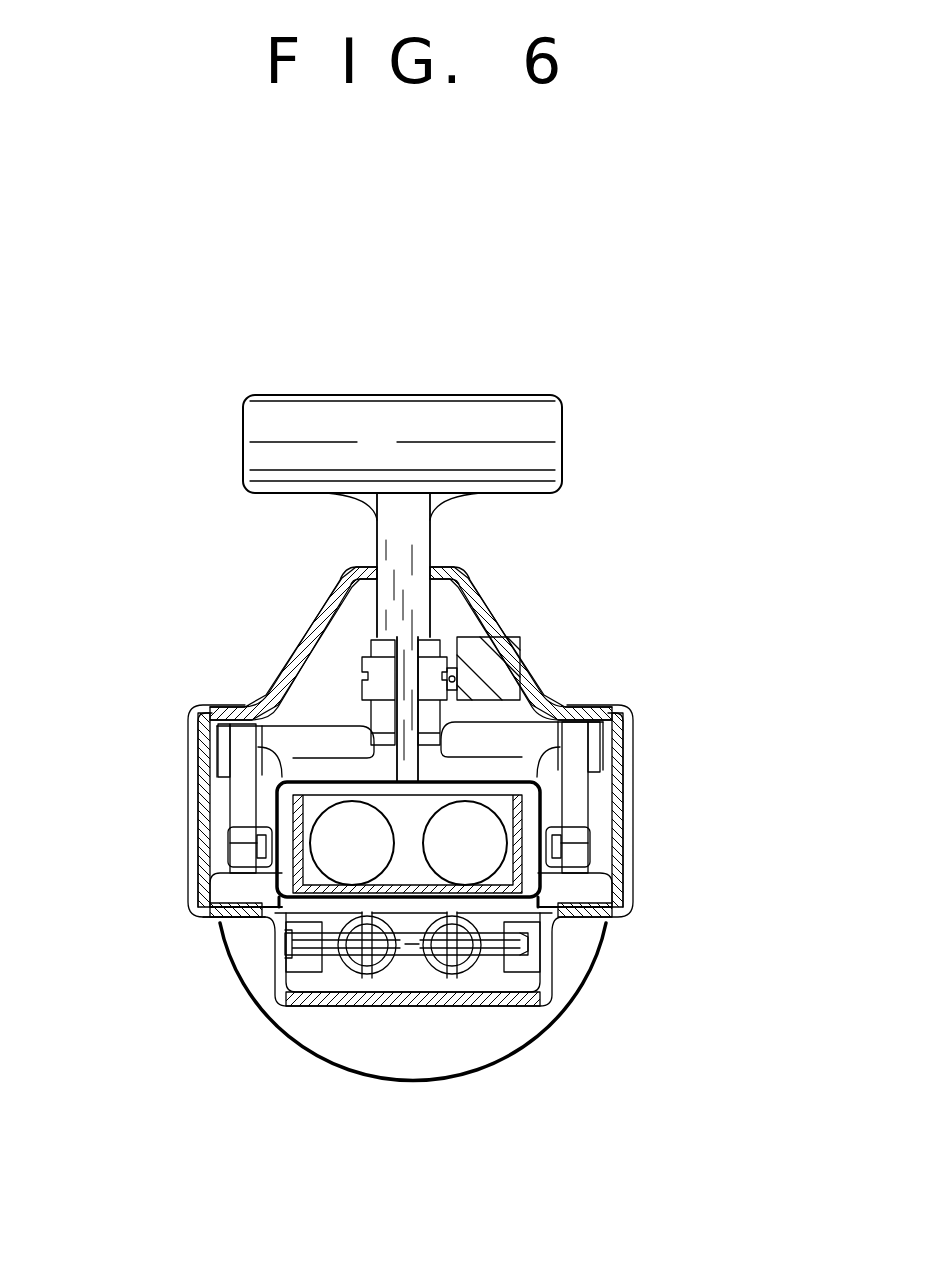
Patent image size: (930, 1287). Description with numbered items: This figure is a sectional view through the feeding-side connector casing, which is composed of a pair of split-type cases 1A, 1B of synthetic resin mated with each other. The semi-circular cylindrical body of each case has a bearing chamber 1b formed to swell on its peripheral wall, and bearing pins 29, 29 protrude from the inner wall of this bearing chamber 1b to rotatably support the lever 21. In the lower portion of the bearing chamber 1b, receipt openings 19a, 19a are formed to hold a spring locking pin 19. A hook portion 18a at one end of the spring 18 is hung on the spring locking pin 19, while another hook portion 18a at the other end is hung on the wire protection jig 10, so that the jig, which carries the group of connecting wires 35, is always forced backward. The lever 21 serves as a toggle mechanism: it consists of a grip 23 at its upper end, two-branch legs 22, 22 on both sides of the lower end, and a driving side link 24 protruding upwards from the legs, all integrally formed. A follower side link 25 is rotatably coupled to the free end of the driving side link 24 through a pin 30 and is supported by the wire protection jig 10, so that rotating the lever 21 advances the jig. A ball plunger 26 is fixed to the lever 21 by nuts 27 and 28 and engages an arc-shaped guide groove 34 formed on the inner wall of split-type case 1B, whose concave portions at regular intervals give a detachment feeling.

The grip 23 is at (512, 425).
The lever 21 is at (415, 532).
The nut 27 is at (376, 668).
The nut 28 is at (432, 672).
The ball plunger 26 is at (455, 675).
The guide groove 34 is at (497, 660).
The leg 22 is at (343, 735).
The connecting wire 35 is at (350, 827).
The follower side link 25 is at (200, 715).
The pin 30 is at (224, 735).
The driving side link 24 is at (243, 797).
The bearing pin 29 is at (238, 842).
The bearing chamber 1b is at (617, 872).
The wire protection jig 10 is at (267, 922).
The receipt opening 19a is at (280, 957).
The split-type case 1A is at (283, 1030).
The spring 18 is at (350, 977).
The hook portion 18a is at (412, 957).
The spring locking pin 19 is at (463, 957).
The split-type case 1B is at (553, 1017).